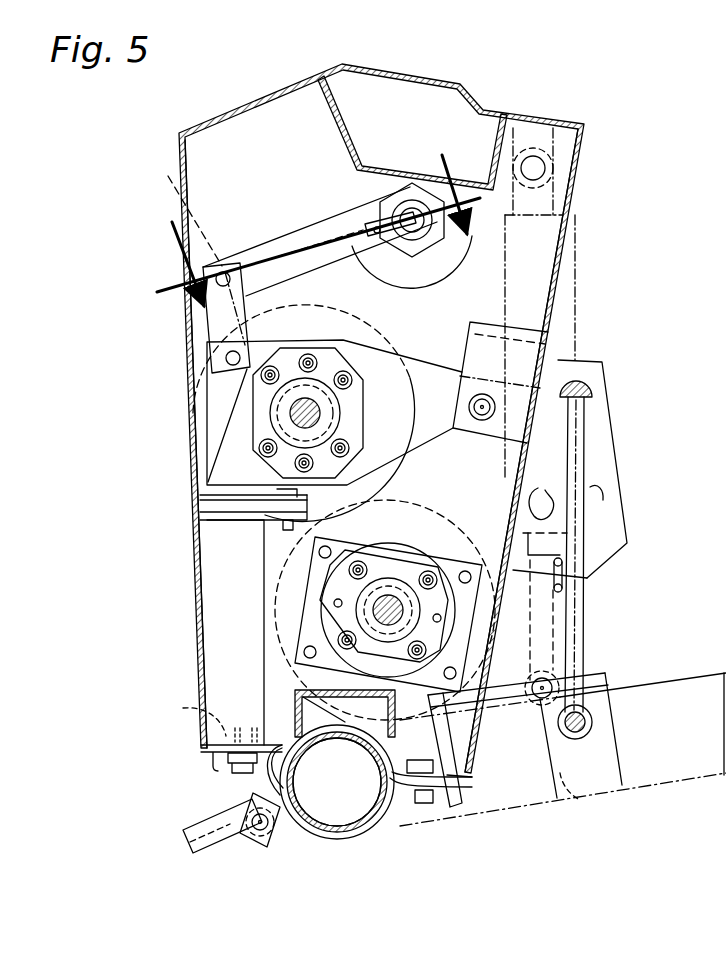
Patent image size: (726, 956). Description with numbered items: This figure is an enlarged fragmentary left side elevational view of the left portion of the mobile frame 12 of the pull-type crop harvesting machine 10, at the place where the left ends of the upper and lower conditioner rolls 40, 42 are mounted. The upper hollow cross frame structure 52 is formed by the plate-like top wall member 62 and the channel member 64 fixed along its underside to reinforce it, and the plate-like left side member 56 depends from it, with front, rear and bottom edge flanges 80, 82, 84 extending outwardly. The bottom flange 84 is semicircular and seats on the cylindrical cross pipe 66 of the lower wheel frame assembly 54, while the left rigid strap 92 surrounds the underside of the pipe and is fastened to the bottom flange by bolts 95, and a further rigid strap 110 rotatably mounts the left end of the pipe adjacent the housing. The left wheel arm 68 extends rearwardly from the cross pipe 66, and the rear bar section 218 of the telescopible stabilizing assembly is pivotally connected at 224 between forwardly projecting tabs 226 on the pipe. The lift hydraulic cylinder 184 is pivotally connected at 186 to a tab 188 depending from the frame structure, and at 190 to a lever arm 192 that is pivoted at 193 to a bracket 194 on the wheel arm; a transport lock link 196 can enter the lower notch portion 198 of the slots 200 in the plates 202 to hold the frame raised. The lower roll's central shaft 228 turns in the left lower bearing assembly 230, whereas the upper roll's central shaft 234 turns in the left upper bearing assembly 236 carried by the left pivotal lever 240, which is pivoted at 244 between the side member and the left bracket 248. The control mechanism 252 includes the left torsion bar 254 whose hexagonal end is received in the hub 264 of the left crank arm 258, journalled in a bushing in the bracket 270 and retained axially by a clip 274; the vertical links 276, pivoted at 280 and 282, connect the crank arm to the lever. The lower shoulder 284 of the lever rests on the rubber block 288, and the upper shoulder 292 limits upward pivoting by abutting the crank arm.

The pull-type crop harvesting machine 10 is at (301, 215).
The mobile frame 12 is at (572, 87).
The upper conditioner roll 40 is at (396, 328).
The lower conditioner roll 42 is at (440, 498).
The upper hollow cross frame structure 52 is at (398, 69).
The lower wheel frame assembly 54 is at (428, 830).
The left side member 56 is at (256, 153).
The top wall member 62 is at (413, 80).
The channel member 64 is at (350, 148).
The cylindrical cross pipe 66 is at (352, 838).
The left wheel arm 68 is at (667, 783).
The front edge flange 80 is at (200, 590).
The rear edge flange 82 is at (561, 270).
The bottom edge flange 84 is at (216, 755).
The left rigid strap 92 is at (343, 840).
The bolts 95 is at (425, 758).
The rigid strap 110 is at (235, 632).
The hydraulic cylinder 184 is at (576, 318).
The pivotal connection 186 is at (547, 170).
The tab 188 is at (582, 130).
The pivotal connection 190 is at (548, 665).
The lever arm 192 is at (492, 710).
The pivotal connection 193 is at (476, 752).
The bracket 194 is at (576, 800).
The transport lock link 196 is at (586, 615).
The lower notch portion 198 is at (543, 494).
The slots 200 is at (604, 500).
The plates 202 is at (611, 452).
The rear bar section 218 is at (215, 850).
The pivotal connection 224 is at (262, 830).
The forwardly projecting tabs 226 is at (283, 836).
The central shaft 228 is at (373, 612).
The left lower bearing assembly 230 is at (428, 526).
The central shaft 234 is at (320, 412).
The left upper bearing assembly 236 is at (358, 382).
The left pivotal lever 240 is at (410, 360).
The pivotal mounting 244 is at (473, 413).
The left bracket 248 is at (500, 312).
The control mechanism 252 is at (341, 190).
The left torsion bar 254 is at (440, 250).
The left crank arm 258 is at (330, 217).
The left hub 264 is at (390, 270).
The left bracket 270 is at (477, 223).
The clip 274 is at (363, 253).
The left pair of vertical links 276 is at (185, 322).
The upper pivotal connection 280 is at (225, 263).
The lower pivotal connection 282 is at (227, 356).
The lower shoulder 284 is at (200, 496).
The rubber block 288 is at (200, 515).
The upper shoulder 292 is at (171, 212).